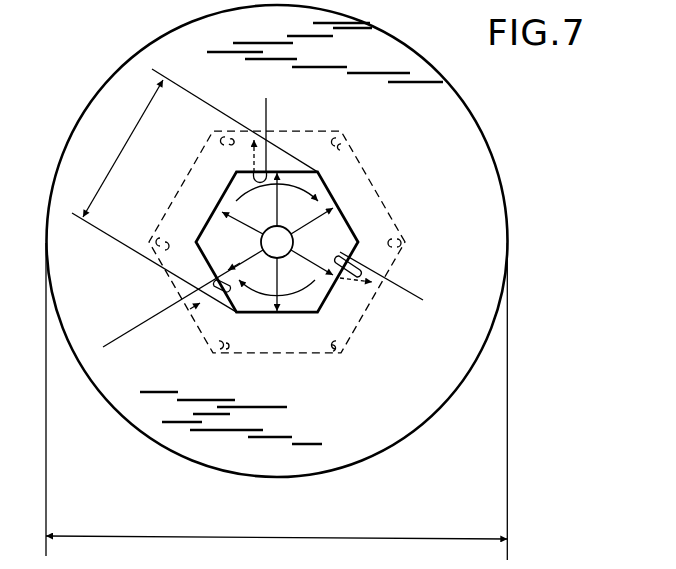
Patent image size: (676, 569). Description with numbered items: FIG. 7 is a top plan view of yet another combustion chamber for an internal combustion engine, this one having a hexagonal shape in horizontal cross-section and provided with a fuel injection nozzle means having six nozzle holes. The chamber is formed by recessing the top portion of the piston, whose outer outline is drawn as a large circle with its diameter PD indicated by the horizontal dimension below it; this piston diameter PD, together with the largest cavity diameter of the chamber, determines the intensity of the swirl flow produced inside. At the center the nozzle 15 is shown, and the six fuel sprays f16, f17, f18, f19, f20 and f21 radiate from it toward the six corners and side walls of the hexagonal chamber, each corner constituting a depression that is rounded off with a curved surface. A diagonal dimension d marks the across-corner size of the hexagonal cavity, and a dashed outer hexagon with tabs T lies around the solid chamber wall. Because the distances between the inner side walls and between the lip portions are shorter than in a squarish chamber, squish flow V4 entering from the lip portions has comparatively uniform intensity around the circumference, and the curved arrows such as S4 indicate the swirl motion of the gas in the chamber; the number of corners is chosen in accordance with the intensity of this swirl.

The hexagonal die body with central bore 15 is at (261, 238).
The fuel spray f16 is at (278, 208).
The fuel spray f17 is at (313, 222).
The fuel spray f18 is at (318, 275).
The fuel spray f19 is at (268, 275).
The fuel spray f20 is at (232, 262).
The fuel spray f21 is at (238, 205).
The squish flow V4 is at (327, 187).
The circumferential flow path S4 is at (294, 300).
The tabs at hexagon corners T is at (335, 133).
The across-corner dimension of hexagon d is at (195, 190).
The diameter of the piston PD is at (276, 401).